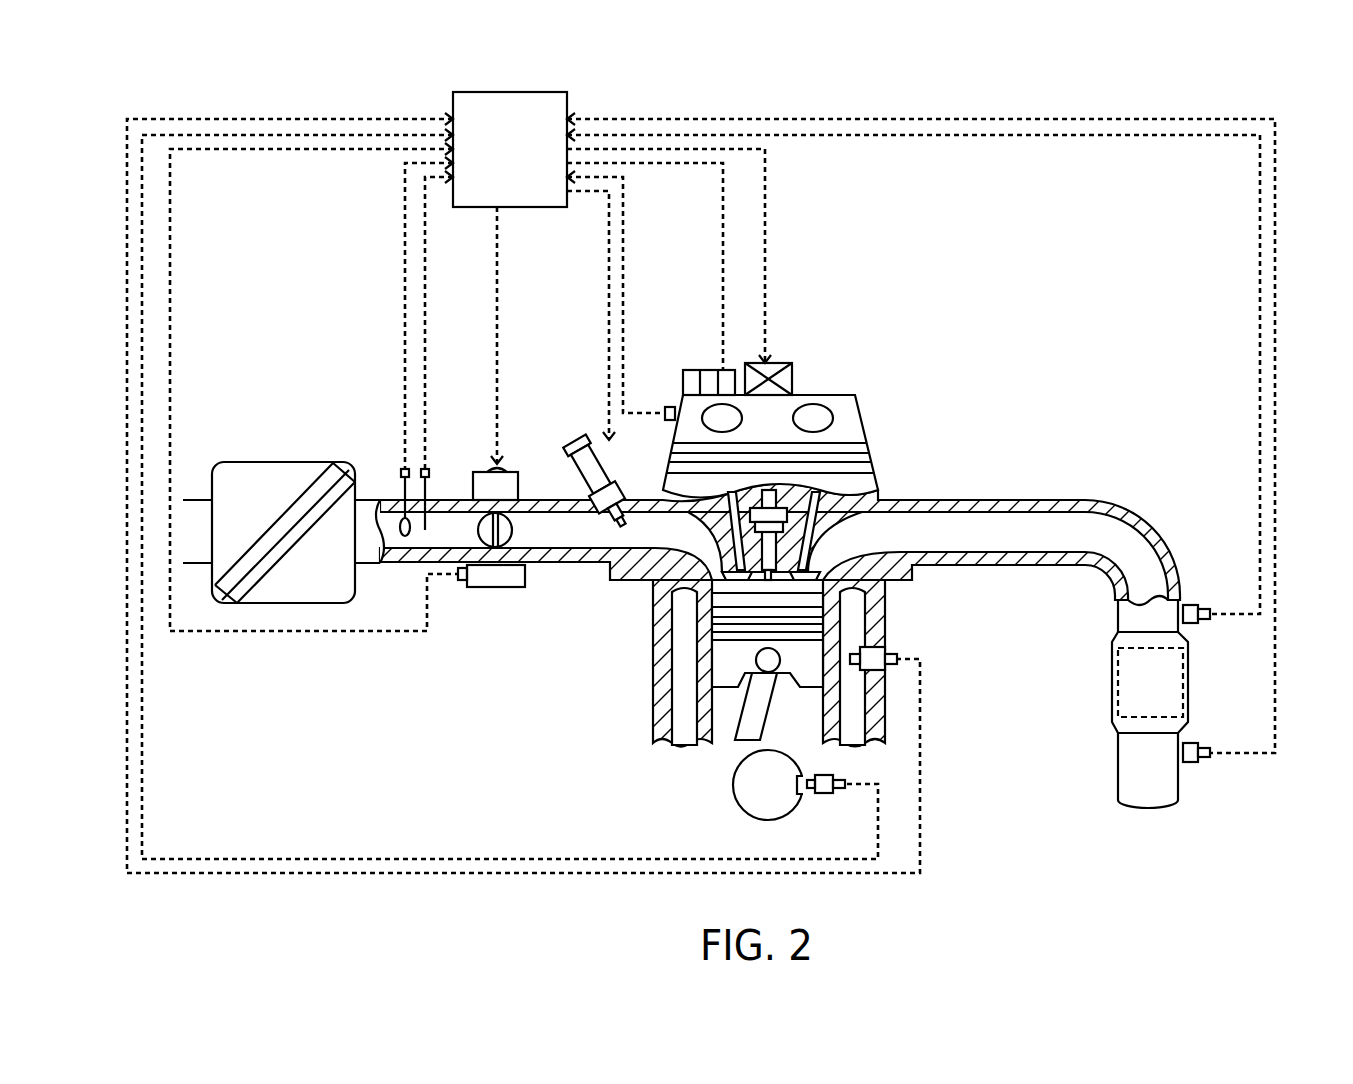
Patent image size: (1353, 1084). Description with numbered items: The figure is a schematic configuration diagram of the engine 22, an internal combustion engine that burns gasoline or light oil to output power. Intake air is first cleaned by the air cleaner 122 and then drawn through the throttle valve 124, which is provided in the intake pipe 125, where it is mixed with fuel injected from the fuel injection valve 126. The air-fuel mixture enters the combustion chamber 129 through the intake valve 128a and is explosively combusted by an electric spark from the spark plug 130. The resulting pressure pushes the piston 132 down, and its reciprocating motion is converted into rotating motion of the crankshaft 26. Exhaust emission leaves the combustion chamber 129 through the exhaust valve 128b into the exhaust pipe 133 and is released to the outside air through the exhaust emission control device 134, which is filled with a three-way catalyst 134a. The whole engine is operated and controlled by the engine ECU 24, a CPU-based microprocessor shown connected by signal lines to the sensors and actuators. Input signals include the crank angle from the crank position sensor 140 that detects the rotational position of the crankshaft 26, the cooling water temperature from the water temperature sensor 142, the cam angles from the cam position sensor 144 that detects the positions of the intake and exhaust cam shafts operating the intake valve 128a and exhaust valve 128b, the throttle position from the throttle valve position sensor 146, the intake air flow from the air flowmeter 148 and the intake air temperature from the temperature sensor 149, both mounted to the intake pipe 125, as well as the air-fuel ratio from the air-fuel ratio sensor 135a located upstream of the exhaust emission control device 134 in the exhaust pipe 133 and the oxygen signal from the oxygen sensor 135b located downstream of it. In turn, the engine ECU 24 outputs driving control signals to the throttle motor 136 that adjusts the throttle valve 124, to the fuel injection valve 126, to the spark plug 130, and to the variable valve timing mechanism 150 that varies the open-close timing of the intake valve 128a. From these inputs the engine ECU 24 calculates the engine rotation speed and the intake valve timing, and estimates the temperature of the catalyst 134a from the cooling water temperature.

The engine 22 is at (870, 310).
The engine electronic control unit 24 is at (537, 90).
The crankshaft 26 is at (733, 782).
The air cleaner 122 is at (287, 462).
The throttle valve 124 is at (512, 535).
The intake pipe 125 is at (577, 555).
The fuel injection valve 126 is at (578, 446).
The intake valve 128a is at (735, 570).
The exhaust valve 128b is at (800, 568).
The combustion chamber 129 is at (793, 588).
The spark plug 130 is at (768, 553).
The piston 132 is at (730, 667).
The exhaust pipe 133 is at (940, 500).
The exhaust emission control device 134 is at (1112, 676).
The catalyst 134a is at (1112, 698).
The air-fuel ratio sensor 135a is at (1192, 605).
The oxygen sensor 135b is at (1190, 765).
The throttle motor 136 is at (485, 470).
The crank position sensor 140 is at (827, 795).
The water temperature sensor 142 is at (885, 650).
The cam position sensor 144 is at (670, 406).
The throttle valve position sensor 146 is at (497, 590).
The air flowmeter 148 is at (398, 473).
The temperature sensor 149 is at (452, 462).
The variable valve timing mechanism 150 is at (722, 389).